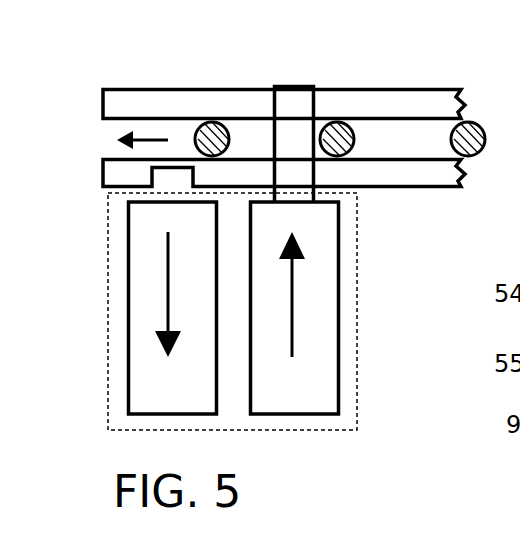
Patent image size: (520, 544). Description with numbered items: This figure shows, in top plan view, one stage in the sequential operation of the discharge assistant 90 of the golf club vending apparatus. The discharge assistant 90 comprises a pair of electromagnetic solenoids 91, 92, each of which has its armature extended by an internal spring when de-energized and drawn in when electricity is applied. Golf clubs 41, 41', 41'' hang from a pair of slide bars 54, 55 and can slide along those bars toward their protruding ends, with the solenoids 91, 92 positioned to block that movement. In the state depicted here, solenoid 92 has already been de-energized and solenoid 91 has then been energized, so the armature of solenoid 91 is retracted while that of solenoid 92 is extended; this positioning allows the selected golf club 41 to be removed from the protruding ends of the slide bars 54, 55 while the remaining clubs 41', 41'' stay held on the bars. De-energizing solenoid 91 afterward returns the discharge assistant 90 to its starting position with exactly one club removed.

The golf club 41 is at (219, 91).
The golf club 41' is at (348, 91).
The golf club 41'' is at (485, 91).
The slide bar 54 is at (104, 110).
The slide bar 55 is at (104, 176).
The discharge assistant 90 is at (352, 426).
The electromagnetic solenoid 91 is at (131, 337).
The electromagnetic solenoid 92 is at (325, 313).